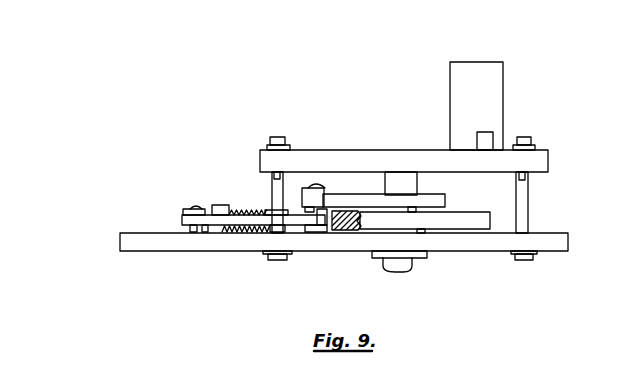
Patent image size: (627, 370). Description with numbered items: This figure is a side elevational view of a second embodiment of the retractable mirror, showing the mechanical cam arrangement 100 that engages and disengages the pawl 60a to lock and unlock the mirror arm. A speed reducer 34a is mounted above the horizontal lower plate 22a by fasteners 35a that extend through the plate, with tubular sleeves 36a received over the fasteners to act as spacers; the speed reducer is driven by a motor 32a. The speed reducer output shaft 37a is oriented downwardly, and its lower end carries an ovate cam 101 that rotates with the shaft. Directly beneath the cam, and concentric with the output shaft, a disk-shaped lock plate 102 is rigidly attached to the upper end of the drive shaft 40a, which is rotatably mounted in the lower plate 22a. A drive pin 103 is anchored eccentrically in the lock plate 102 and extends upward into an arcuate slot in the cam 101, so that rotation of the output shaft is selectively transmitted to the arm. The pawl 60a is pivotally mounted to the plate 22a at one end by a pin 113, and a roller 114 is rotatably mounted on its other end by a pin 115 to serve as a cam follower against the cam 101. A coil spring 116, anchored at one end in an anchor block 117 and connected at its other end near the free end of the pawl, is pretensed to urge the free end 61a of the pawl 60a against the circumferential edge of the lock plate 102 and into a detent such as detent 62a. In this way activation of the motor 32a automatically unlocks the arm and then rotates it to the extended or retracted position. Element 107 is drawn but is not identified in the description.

The lower plate 22a is at (562, 240).
The motor 32a is at (480, 70).
The speed reducer 34a is at (543, 150).
The fasteners 35a is at (267, 257).
The tubular sleeves 36a is at (528, 183).
The speed reducer output shaft 37a is at (397, 172).
The drive shaft 40a is at (415, 267).
The pawl 60a is at (223, 217).
The free end of pawl 61a is at (323, 221).
The detent 62a is at (321, 221).
The mechanical cam arrangement 100 is at (345, 176).
The ovate cam 101 is at (360, 200).
The lock plate 102 is at (490, 217).
The drive pin 103 is at (410, 210).
The pivot block 107 is at (330, 193).
The pin 113 is at (197, 209).
The roller 114 is at (302, 188).
The pin 115 is at (313, 183).
The coil spring 116 is at (247, 212).
The anchor block 117 is at (218, 205).